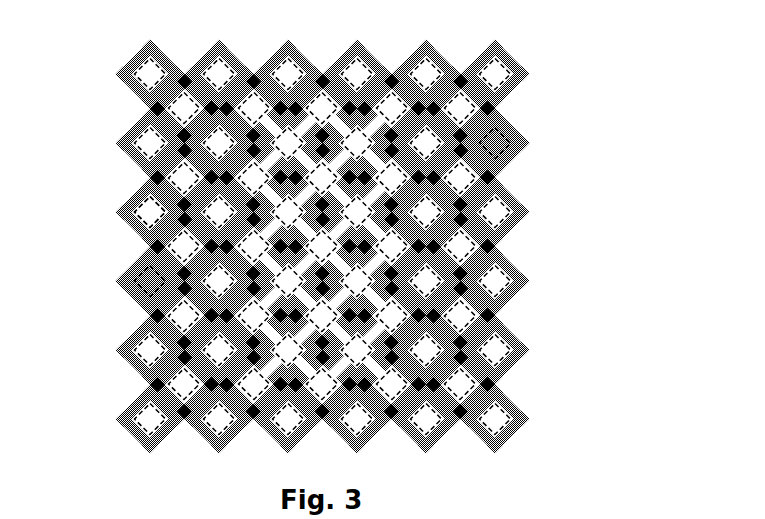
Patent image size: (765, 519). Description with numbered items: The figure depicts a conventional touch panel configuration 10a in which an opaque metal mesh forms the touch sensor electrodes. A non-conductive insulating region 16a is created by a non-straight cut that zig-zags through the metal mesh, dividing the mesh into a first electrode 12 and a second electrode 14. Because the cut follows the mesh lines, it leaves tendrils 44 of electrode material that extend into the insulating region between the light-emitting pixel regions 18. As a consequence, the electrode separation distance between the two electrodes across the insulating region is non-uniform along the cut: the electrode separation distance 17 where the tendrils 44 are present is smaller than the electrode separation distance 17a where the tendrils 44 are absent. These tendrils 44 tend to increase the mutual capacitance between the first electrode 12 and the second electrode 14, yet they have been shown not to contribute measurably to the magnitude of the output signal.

The touch panel configuration 10a is at (578, 87).
The first electrode 12 is at (520, 195).
The second electrode 14 is at (123, 286).
The non-conductive insulating region 16a is at (172, 88).
The electrode separation distance 17 is at (105, 80).
The electrode separation distance 17a is at (139, 49).
The pixel regions 18 is at (152, 209).
The tendrils 44 is at (197, 132).